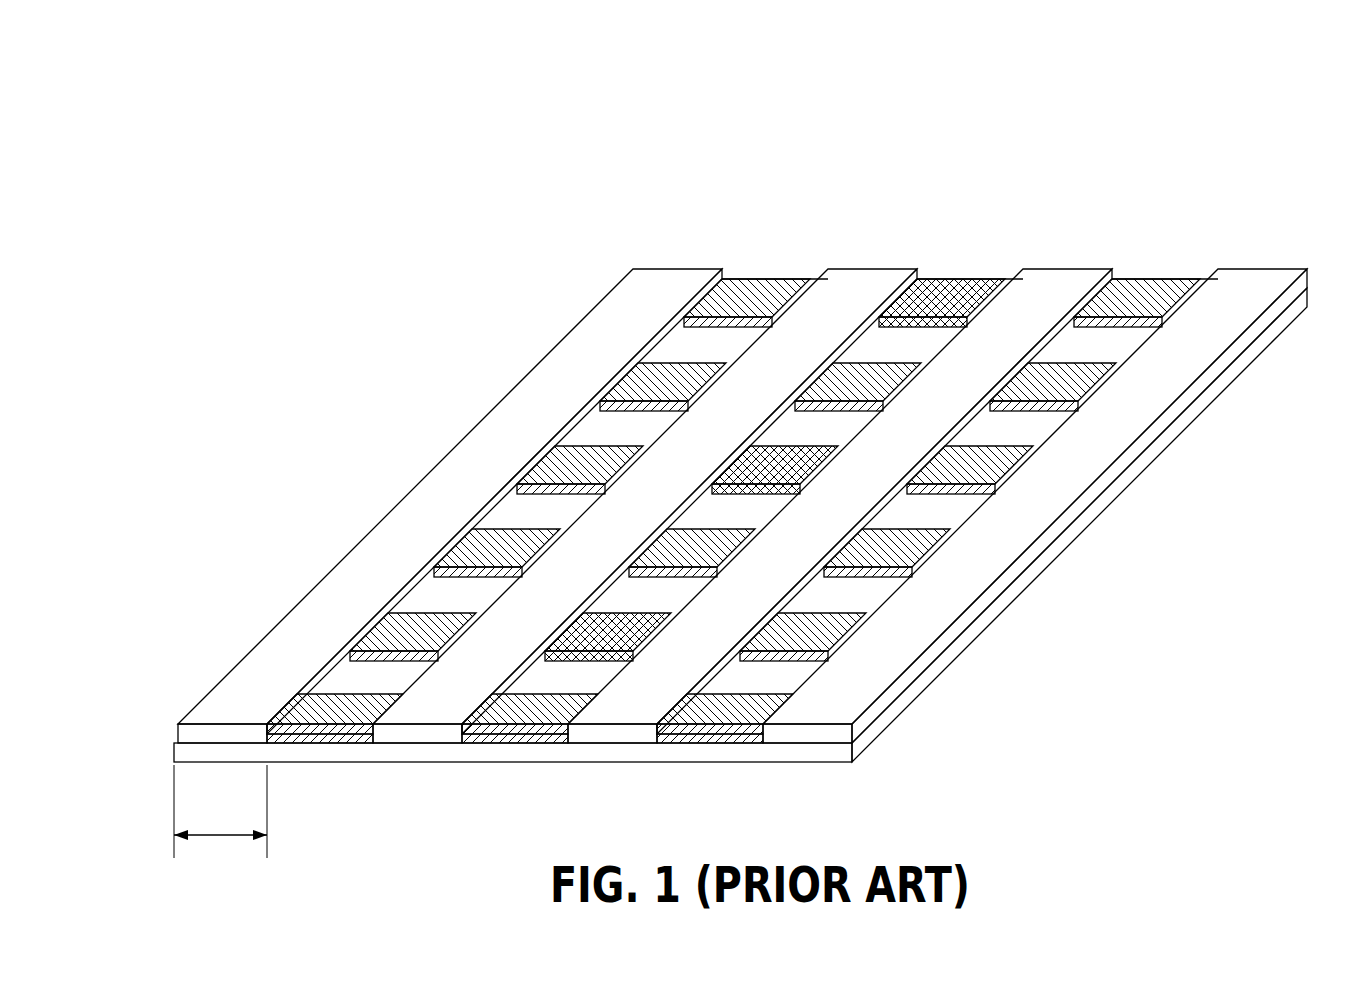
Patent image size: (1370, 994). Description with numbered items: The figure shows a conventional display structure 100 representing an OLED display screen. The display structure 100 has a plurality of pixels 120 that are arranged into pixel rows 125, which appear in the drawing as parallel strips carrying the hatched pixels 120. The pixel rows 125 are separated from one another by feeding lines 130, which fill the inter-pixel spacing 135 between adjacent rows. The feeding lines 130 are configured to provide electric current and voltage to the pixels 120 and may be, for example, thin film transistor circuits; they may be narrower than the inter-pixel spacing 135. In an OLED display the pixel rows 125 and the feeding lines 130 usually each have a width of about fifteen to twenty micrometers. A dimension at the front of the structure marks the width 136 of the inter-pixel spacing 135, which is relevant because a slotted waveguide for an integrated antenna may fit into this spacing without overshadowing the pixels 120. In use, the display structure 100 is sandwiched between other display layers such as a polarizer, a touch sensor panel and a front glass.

The display structure 100 is at (1232, 112).
The pixels 120 is at (965, 295).
The pixel rows 125 is at (763, 239).
The feeding lines 130 is at (222, 712).
The inter-pixel spacing 135 is at (306, 626).
The width of inter-pixel spacing 136 is at (228, 838).